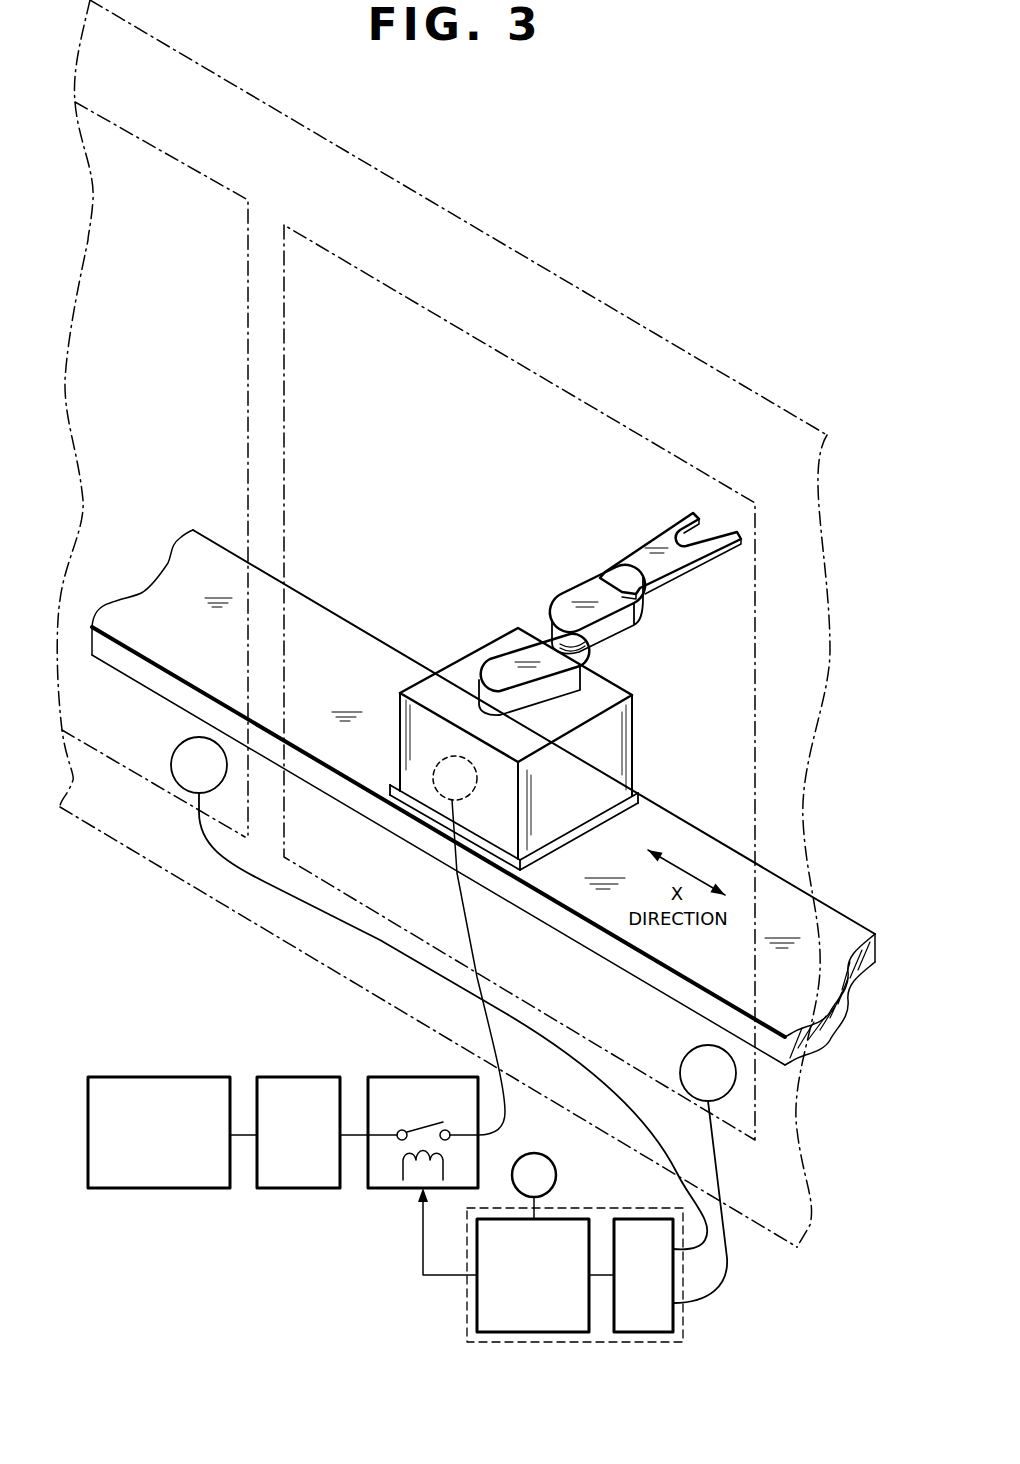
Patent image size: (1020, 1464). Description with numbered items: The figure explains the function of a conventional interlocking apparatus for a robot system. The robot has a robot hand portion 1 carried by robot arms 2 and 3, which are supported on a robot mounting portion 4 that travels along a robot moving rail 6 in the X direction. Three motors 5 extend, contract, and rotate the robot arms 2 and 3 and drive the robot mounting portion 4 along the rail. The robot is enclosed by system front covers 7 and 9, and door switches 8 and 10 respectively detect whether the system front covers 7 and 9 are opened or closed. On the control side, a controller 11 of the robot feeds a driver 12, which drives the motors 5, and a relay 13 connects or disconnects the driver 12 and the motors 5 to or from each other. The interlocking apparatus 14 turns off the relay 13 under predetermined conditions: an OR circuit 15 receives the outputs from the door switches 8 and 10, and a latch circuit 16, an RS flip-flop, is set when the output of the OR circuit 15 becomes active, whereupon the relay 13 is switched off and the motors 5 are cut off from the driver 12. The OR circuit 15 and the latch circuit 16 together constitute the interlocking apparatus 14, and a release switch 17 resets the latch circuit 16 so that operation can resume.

The robot hand portion 1 is at (680, 547).
The robot arm 2 is at (627, 618).
The robot arm 3 is at (578, 666).
The robot mounting portion 4 is at (628, 686).
The motor 5 is at (452, 757).
The robot moving rail 6 is at (845, 927).
The system front cover 7 is at (755, 786).
The door switch 8 is at (722, 1076).
The system front cover 9 is at (203, 175).
The door switch 10 is at (187, 777).
The controller 11 is at (173, 1191).
The driver 12 is at (311, 1191).
The relay 13 is at (407, 1191).
The interlocking apparatus 14 is at (592, 1208).
The OR circuit 15 is at (677, 1317).
The latch circuit 16 is at (475, 1308).
The release switch 17 is at (540, 1147).